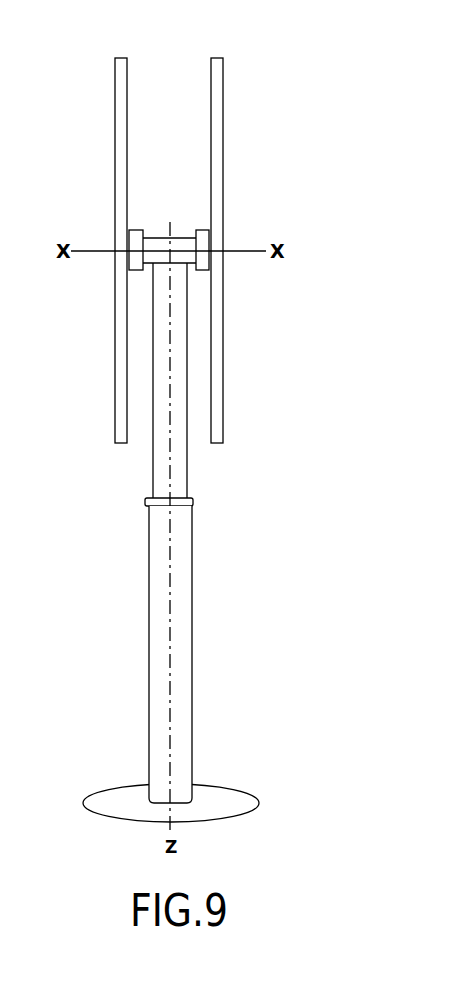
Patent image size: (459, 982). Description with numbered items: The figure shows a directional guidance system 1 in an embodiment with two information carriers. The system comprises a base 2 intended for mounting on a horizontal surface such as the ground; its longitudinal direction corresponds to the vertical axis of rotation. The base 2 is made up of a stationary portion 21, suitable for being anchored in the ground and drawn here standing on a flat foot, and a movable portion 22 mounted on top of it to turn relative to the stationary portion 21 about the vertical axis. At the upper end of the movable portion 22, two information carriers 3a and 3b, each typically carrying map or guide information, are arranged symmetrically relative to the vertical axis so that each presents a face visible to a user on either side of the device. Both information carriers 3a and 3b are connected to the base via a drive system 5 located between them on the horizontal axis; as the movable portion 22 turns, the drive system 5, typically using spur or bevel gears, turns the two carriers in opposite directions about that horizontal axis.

The directional guidance system 1 is at (253, 80).
The base 2 is at (210, 613).
The information carrier 3a is at (122, 127).
The information carrier 3b is at (217, 127).
The drive system 5 is at (171, 228).
The stationary portion 21 is at (158, 692).
The movable portion 22 is at (154, 384).